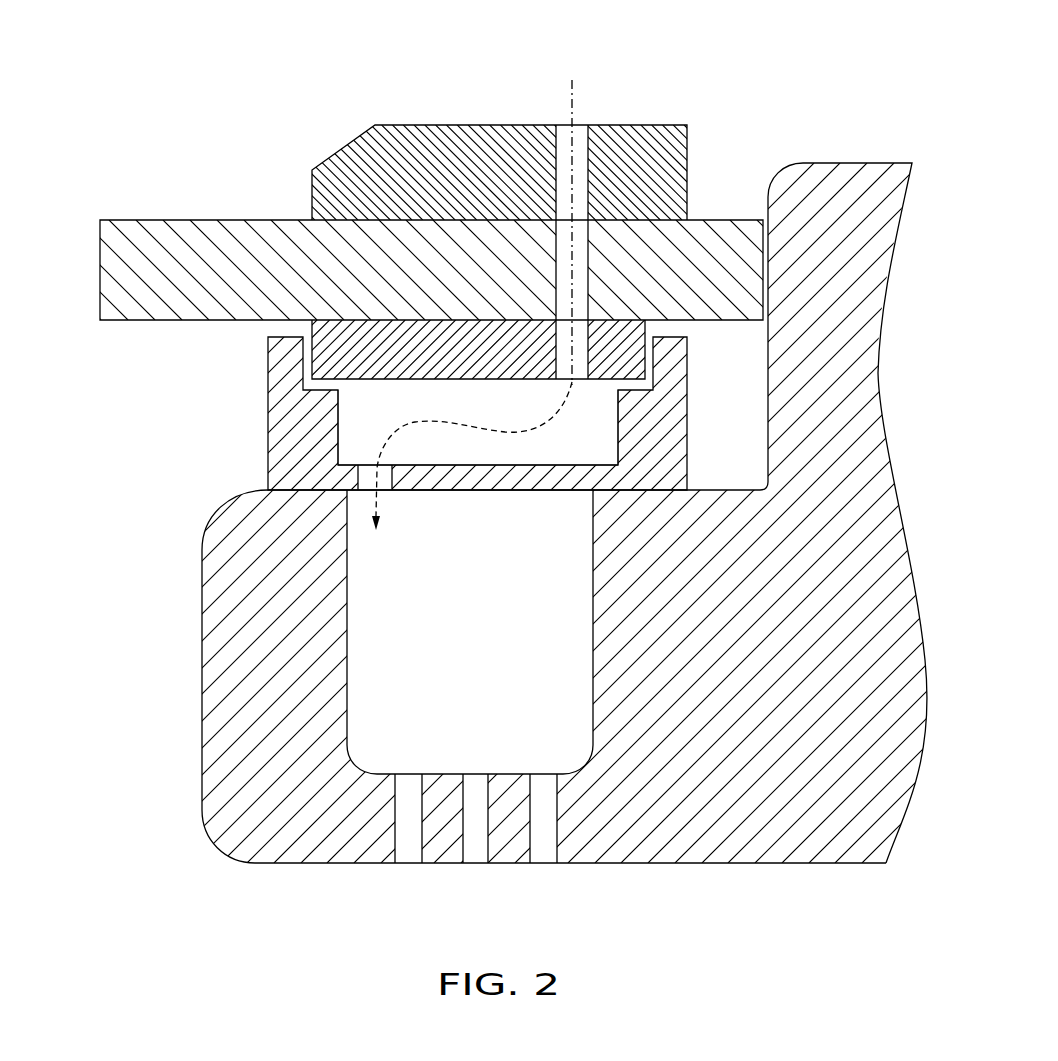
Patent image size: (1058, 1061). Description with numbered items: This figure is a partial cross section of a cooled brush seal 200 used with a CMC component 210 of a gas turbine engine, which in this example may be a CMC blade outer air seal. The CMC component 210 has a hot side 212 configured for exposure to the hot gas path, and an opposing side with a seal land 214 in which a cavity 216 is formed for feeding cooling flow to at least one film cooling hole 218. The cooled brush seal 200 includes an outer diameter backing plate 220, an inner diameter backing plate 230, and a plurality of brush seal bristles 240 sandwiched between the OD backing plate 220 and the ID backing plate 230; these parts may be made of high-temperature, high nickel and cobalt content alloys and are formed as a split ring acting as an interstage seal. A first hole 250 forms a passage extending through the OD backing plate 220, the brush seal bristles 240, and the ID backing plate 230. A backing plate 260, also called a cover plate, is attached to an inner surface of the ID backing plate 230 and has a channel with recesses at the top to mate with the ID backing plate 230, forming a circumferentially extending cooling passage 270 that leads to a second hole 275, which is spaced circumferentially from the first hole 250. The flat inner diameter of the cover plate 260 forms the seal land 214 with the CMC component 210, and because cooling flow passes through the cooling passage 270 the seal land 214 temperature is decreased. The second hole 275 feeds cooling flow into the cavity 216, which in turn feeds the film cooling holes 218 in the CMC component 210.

The cooled brush seal 200 is at (529, 457).
The CMC component 210 is at (200, 653).
The hot side 212 is at (812, 865).
The seal land 214 is at (312, 490).
The cavity 216 is at (492, 654).
The film cooling hole 218 is at (478, 774).
The outer diameter (OD) backing plate 220 is at (333, 153).
The inner diameter (ID) backing plate 230 is at (306, 359).
The brush seal bristles 240 is at (196, 215).
The first hole 250 is at (565, 123).
The backing plate (cover plate) 260 is at (265, 426).
The cooling channel (cooling passage) 270 is at (602, 449).
The second hole 275 is at (383, 493).